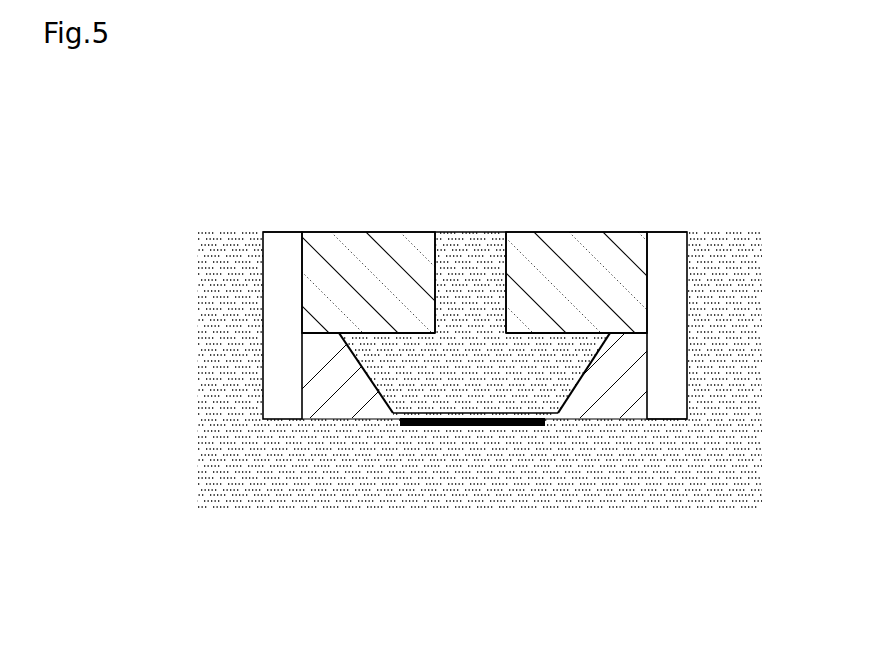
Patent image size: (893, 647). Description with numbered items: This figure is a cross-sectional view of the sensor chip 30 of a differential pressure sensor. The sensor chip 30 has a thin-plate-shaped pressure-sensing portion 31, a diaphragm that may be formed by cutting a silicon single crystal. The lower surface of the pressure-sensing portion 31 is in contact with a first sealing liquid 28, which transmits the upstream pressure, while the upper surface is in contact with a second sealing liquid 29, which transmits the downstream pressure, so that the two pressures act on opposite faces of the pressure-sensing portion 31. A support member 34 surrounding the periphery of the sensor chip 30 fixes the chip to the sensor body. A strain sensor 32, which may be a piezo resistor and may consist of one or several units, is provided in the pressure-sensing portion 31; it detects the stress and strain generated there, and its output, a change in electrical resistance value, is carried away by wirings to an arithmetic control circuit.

The first sealing liquid 28 is at (333, 478).
The second sealing liquid 29 is at (475, 248).
The sensor chip 30 is at (670, 156).
The pressure-sensing portion 31 is at (517, 425).
The strain sensor 32 is at (460, 428).
The support member 34 is at (287, 278).